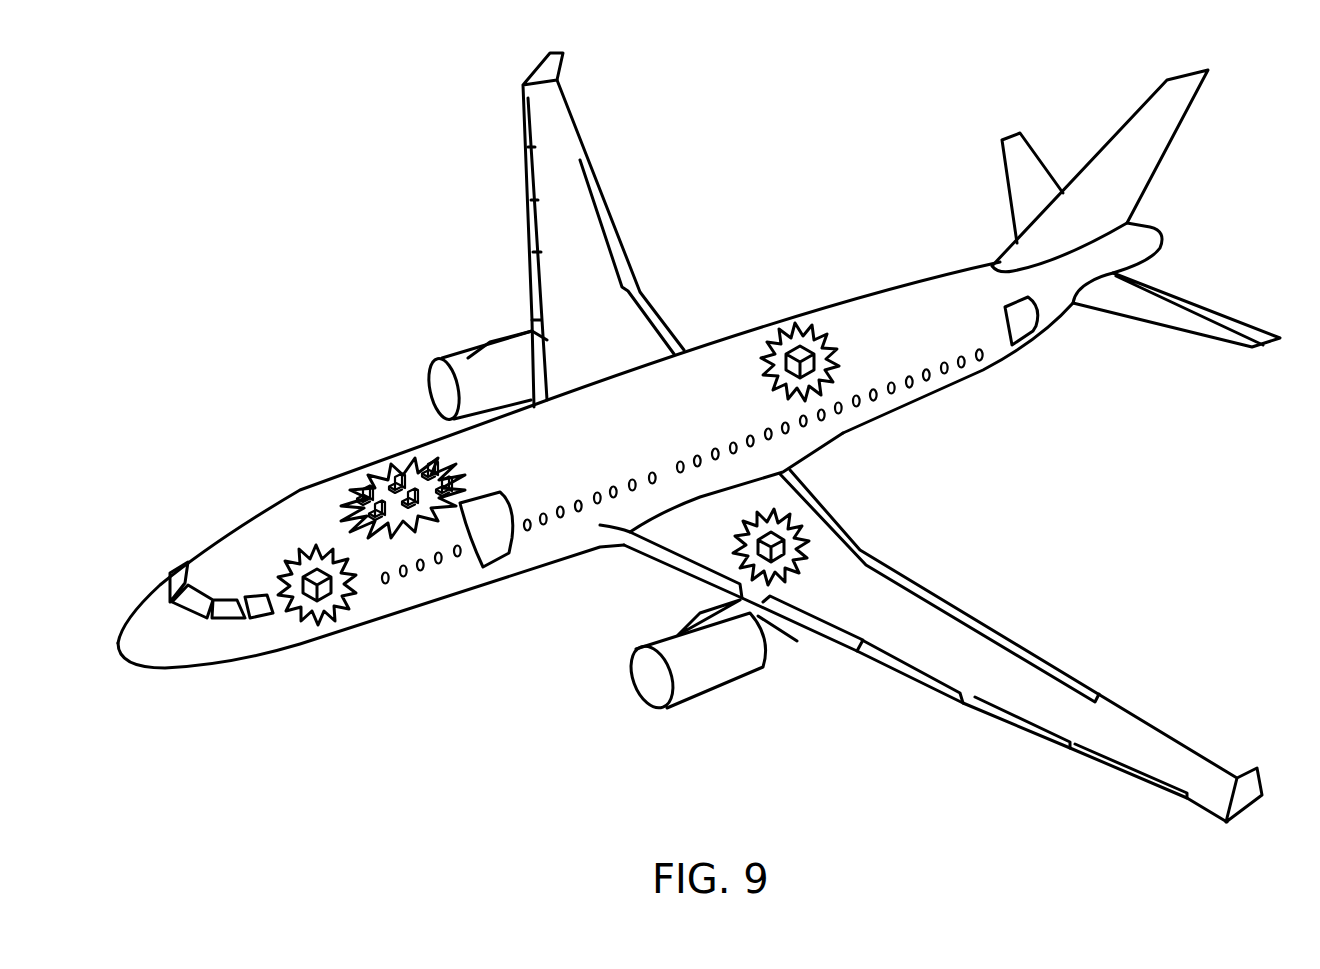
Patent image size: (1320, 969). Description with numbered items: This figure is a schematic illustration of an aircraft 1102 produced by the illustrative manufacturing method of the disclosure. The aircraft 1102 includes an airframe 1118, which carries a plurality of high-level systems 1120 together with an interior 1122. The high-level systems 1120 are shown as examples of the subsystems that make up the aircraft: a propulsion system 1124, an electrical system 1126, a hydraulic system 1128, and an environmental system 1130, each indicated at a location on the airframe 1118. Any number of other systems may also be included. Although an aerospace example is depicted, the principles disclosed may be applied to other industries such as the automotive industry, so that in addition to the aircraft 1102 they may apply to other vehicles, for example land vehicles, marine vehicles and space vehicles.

The aircraft 1102 is at (699, 437).
The airframe 1118 is at (357, 438).
The high-level systems 1120 is at (1048, 512).
The interior 1122 is at (367, 492).
The propulsion system 1124 is at (455, 355).
The electrical system 1126 is at (312, 566).
The hydraulic system 1128 is at (790, 535).
The environmental system 1130 is at (790, 350).